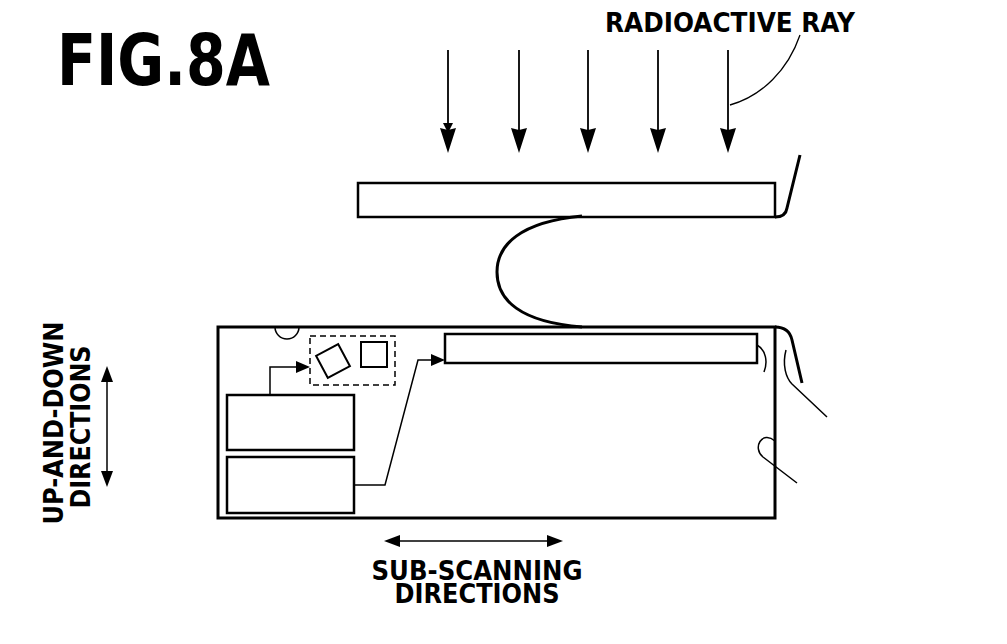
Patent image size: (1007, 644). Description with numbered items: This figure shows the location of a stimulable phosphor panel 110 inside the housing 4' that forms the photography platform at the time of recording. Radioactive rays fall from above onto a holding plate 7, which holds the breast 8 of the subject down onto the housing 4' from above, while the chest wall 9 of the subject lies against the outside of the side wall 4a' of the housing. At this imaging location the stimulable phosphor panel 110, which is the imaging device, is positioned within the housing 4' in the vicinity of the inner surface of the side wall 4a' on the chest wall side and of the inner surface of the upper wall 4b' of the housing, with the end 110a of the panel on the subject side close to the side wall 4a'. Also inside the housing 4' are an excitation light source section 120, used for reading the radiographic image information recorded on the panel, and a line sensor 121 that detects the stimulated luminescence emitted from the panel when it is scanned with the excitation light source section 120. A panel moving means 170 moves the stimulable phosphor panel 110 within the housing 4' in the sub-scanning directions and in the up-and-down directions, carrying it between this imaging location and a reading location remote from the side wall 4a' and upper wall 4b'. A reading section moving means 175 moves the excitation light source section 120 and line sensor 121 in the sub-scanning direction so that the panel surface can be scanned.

The holding plate 7 is at (400, 183).
The breast 8 is at (512, 272).
The chest wall 9 is at (810, 381).
The housing 4' is at (480, 395).
The side wall 4a' is at (797, 469).
The upper wall 4b' is at (275, 305).
The stimulable phosphor panel 110 is at (718, 352).
The end of the stimulable phosphor panel 110a is at (764, 372).
The excitation light source section 120 is at (374, 355).
The line sensor 121 is at (334, 358).
The panel moving means 170 is at (227, 478).
The reading section moving means 175 is at (227, 412).